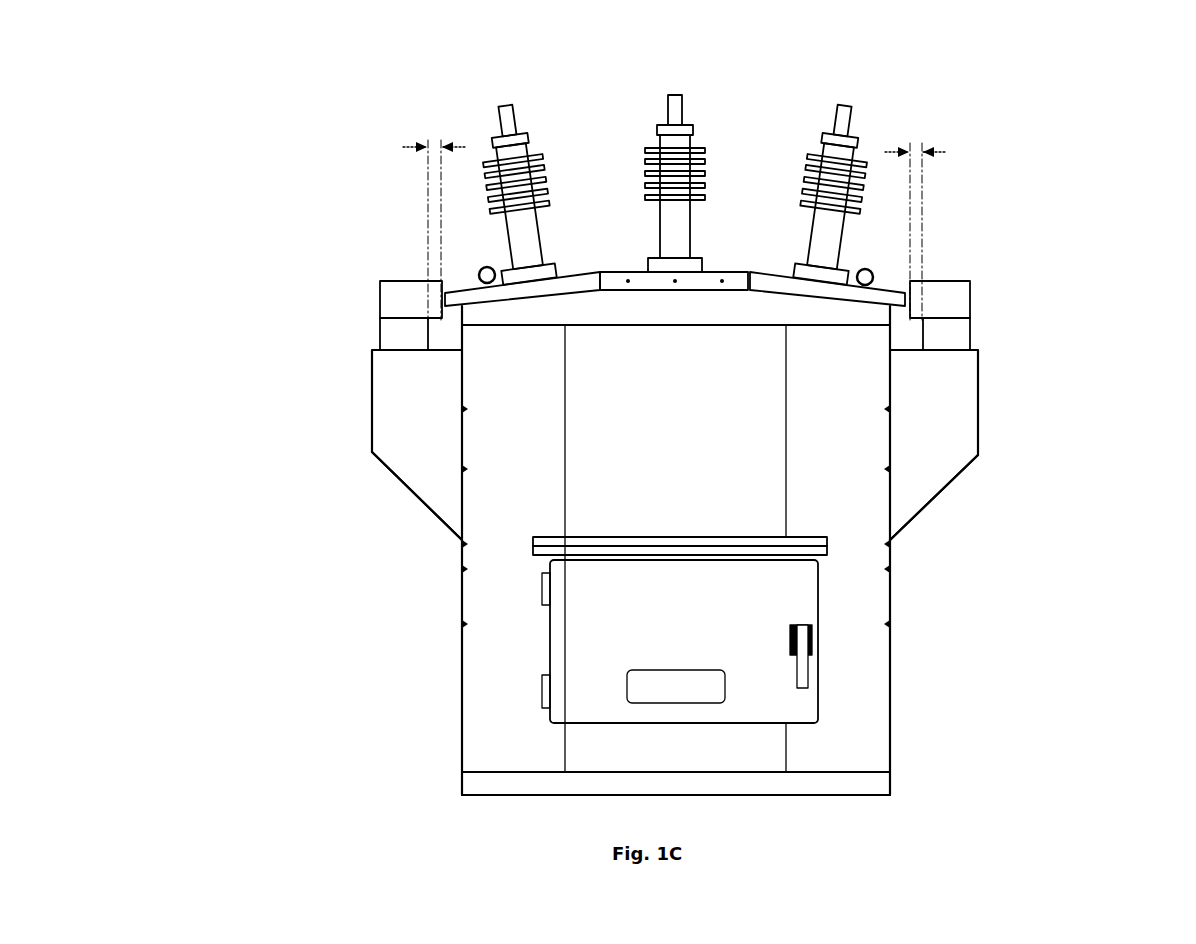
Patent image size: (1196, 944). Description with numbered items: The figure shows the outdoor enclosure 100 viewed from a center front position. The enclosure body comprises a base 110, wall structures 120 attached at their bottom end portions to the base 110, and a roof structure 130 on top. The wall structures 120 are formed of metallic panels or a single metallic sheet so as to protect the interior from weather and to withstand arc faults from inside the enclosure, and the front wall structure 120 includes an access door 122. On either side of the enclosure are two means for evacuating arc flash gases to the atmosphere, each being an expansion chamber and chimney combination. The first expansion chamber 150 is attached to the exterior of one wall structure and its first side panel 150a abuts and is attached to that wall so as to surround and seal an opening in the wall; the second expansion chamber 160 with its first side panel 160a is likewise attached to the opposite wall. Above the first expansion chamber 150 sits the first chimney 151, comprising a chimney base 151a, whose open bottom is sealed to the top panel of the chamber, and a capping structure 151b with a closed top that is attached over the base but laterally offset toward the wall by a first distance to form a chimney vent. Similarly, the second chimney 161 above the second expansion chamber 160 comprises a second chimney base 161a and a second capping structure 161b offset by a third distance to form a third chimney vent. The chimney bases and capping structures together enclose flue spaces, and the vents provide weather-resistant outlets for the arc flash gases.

The outdoor enclosure 100 is at (342, 93).
The base 110 is at (490, 783).
The wall structure 120 is at (868, 720).
The access door 122 is at (680, 630).
The roof structure 130 is at (718, 226).
The first expansion chamber 150 is at (1005, 405).
The first side panel 150a is at (933, 458).
The first chimney 151 is at (1088, 306).
The chimney base 151a is at (950, 332).
The capping structure 151b is at (950, 297).
The second expansion chamber 160 is at (318, 405).
The first side panel 160a is at (410, 462).
The second chimney 161 is at (247, 318).
The second chimney base 161a is at (388, 338).
The second capping structure 161b is at (392, 292).